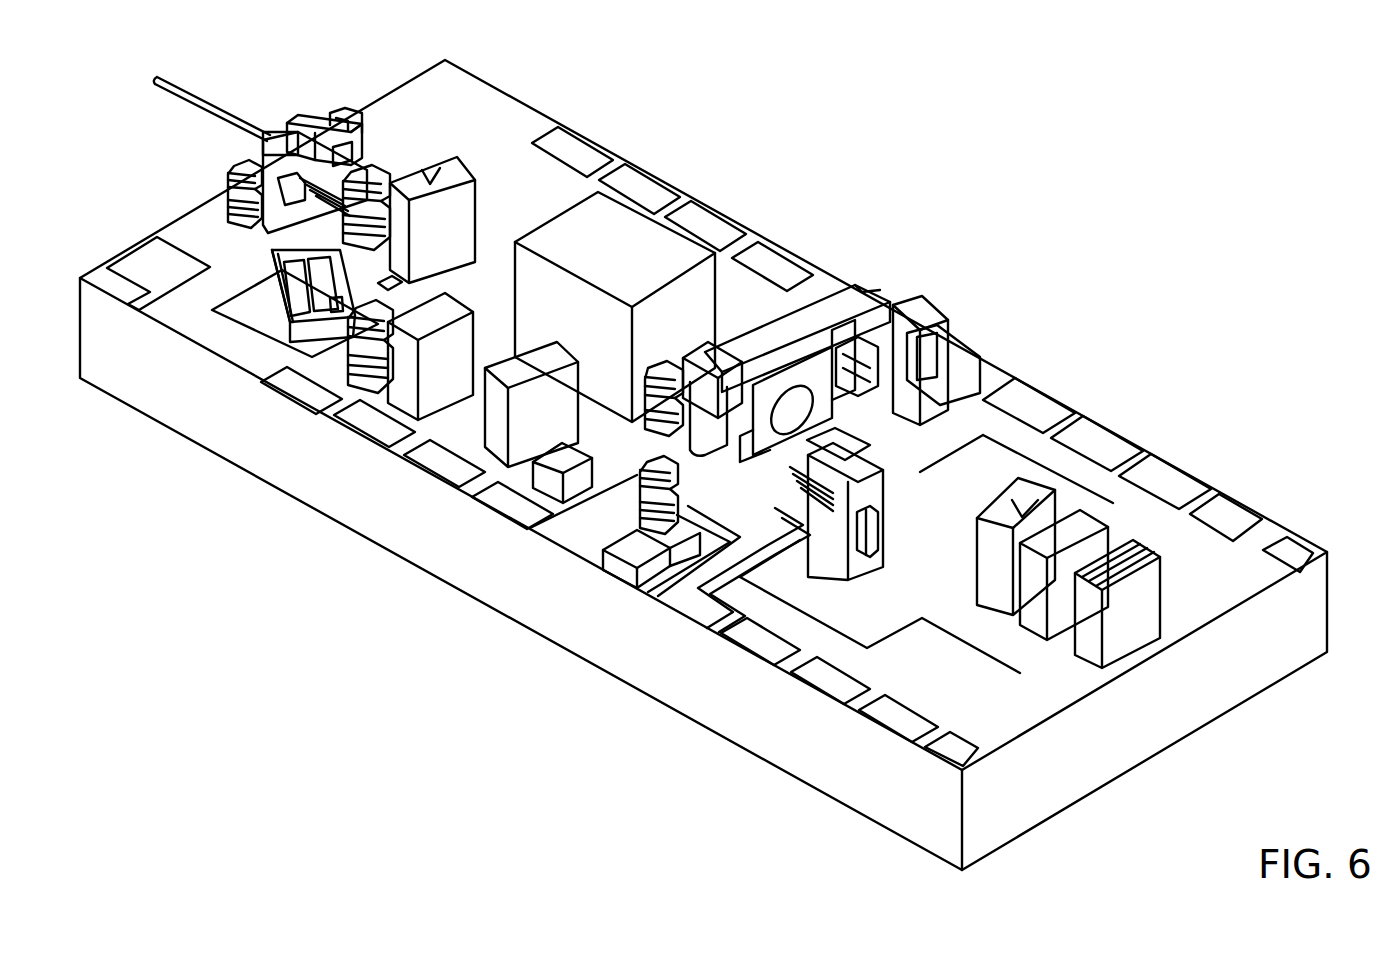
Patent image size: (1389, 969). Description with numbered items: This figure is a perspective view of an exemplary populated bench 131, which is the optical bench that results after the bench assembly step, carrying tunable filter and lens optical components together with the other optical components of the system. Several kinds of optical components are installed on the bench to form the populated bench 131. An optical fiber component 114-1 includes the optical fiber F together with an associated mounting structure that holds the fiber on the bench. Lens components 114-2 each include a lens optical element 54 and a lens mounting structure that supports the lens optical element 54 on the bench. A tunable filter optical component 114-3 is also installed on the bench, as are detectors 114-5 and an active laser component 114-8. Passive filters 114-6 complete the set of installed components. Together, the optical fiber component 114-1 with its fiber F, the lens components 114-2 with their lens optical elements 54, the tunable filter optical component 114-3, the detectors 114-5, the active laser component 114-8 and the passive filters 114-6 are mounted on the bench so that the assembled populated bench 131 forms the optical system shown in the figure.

The populated bench 131 is at (1175, 425).
The optical fiber F is at (245, 120).
The optical fiber component 114-1 is at (335, 112).
The lens component 114-2 is at (375, 187).
The passive filter 114-6 is at (460, 168).
The lens optical element 54 is at (385, 280).
The active laser component 114-8 is at (275, 317).
The tunable filter optical component 114-3 is at (850, 298).
The detector 114-5 is at (877, 537).